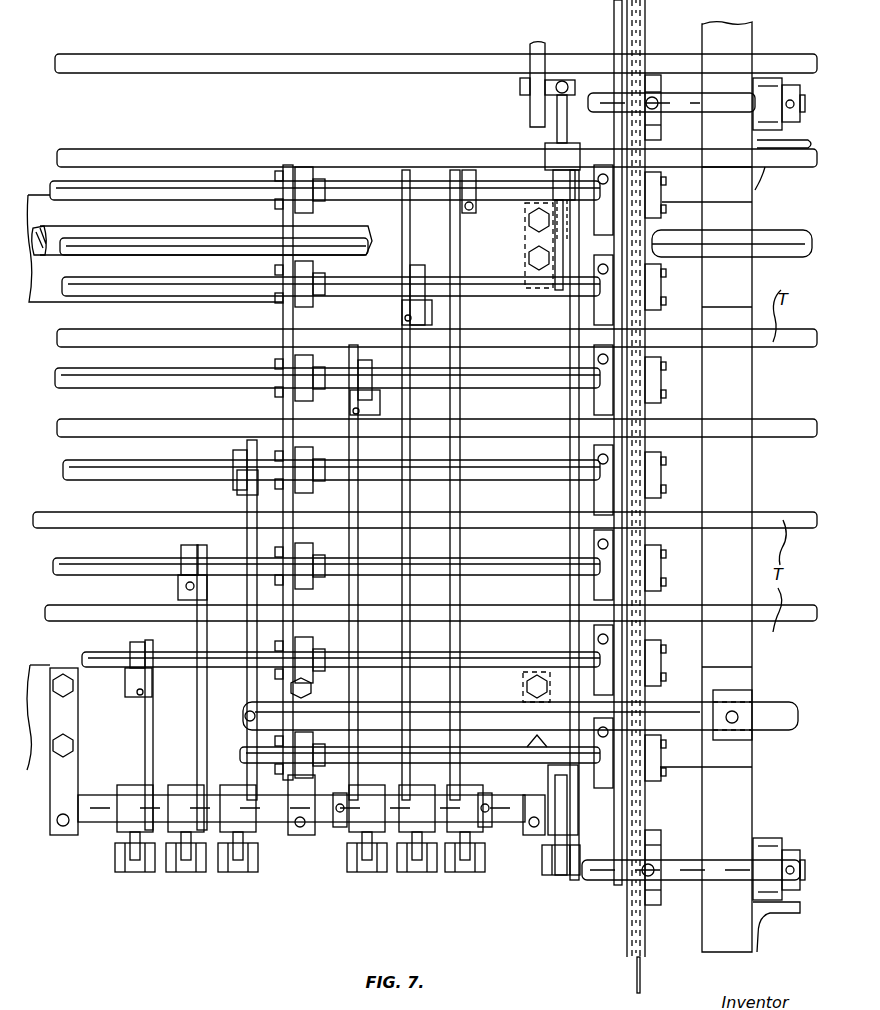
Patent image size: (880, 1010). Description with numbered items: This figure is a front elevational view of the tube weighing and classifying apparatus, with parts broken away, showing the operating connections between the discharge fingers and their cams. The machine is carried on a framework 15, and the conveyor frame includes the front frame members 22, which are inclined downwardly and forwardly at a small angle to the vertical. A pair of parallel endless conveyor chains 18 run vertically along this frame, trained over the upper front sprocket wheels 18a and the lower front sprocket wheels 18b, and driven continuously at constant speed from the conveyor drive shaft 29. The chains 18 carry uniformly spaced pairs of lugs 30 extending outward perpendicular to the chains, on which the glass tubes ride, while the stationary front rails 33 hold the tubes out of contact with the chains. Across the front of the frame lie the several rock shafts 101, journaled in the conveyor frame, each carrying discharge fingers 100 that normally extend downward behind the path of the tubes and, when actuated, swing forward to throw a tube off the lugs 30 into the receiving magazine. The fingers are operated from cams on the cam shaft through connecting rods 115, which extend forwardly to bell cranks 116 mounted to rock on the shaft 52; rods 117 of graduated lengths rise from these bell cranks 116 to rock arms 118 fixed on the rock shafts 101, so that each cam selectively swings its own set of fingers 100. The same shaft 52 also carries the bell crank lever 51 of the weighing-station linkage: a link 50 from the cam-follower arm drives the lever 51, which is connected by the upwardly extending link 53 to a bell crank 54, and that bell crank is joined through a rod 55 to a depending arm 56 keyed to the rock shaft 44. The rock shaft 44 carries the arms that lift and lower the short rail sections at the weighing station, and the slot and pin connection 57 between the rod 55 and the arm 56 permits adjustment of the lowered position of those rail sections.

The framework 15 is at (758, 925).
The conveyor chains 18 is at (646, 50).
The upper front sprocket wheels 18a is at (655, 133).
The lower front sprocket wheels 18b is at (658, 895).
The front frame members 22 is at (753, 815).
The conveyor drive shaft 29 is at (673, 862).
The lugs 30 is at (661, 452).
The front rails 33 is at (614, 36).
The rock shaft 44 is at (735, 105).
The link 50 is at (545, 868).
The bell crank lever 51 is at (552, 835).
The shaft 52 is at (297, 825).
The upwardly extending link 53 is at (572, 300).
The bell crank 54 is at (553, 170).
The rod 55 is at (568, 130).
The depending arm 56 is at (530, 108).
The slot and pin connection 57 is at (520, 87).
The fingers 100 is at (598, 393).
The rock shafts 101 is at (405, 197).
The connecting rods 115 is at (240, 872).
The bell cranks 116 is at (135, 838).
The rods 117 is at (405, 655).
The rock arms 118 is at (418, 275).